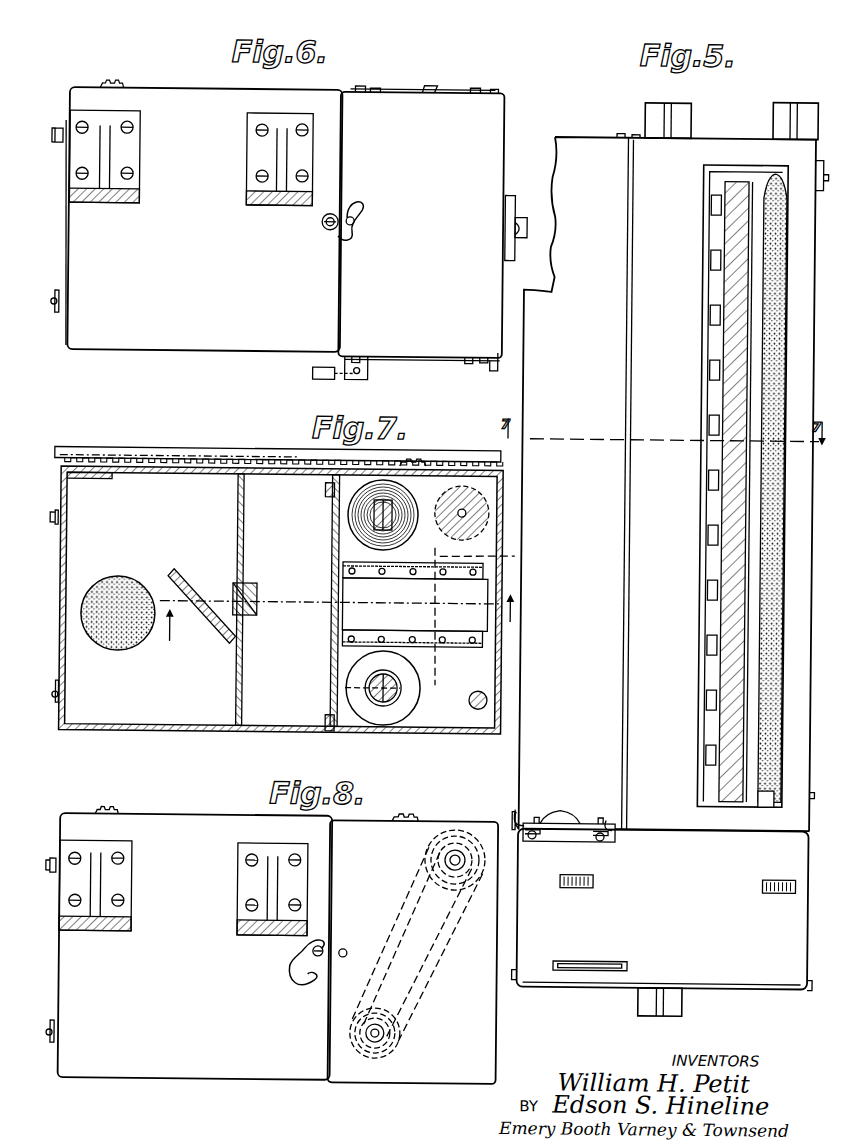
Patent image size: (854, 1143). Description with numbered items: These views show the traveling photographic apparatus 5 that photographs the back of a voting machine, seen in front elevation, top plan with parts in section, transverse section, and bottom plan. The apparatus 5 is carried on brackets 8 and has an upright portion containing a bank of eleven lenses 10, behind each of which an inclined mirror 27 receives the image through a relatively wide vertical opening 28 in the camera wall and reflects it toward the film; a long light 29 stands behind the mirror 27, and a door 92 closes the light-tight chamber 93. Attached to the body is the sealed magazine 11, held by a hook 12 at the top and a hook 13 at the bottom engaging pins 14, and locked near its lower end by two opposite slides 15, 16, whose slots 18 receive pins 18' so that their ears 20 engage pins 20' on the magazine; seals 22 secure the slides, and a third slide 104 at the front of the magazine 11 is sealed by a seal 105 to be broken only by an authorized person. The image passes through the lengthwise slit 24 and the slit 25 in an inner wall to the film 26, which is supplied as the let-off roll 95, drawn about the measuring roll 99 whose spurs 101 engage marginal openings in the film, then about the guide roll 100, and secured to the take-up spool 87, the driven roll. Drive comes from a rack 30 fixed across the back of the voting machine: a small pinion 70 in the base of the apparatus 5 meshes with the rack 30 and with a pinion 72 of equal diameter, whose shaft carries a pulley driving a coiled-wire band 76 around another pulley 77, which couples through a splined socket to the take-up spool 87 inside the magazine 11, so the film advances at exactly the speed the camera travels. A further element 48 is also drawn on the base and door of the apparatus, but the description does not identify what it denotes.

In FIG. 6, the photographic apparatus 5 is at (227, 366).
In FIG. 7, the photographic apparatus 5 is at (236, 749).
In FIG. 8, the photographic apparatus 5 is at (234, 1096).
In FIG. 6, the brackets 8 is at (119, 196).
In FIG. 5, the brackets 8 is at (650, 113).
In FIG. 7, the lenses 10 is at (262, 599).
In FIG. 5, the lenses 10 is at (694, 384).
In FIG. 6, the magazine 11 is at (512, 100).
In FIG. 7, the magazine 11 is at (471, 738).
In FIG. 8, the magazine 11 is at (458, 1094).
In FIG. 5, the magazine 11 is at (674, 482).
In FIG. 6, the hook 12 is at (327, 232).
In FIG. 7, the hook 13 is at (338, 591).
In FIG. 8, the hook 13 is at (308, 982).
In FIG. 6, the pins 14 is at (361, 224).
In FIG. 8, the pins 14 is at (355, 952).
In FIG. 6, the slide 15 is at (427, 362).
In FIG. 5, the slide 16 is at (582, 833).
In FIG. 5, the slot 18 is at (576, 848).
In FIG. 5, the pin 18' is at (564, 810).
In FIG. 5, the ear 20 is at (572, 800).
In FIG. 5, the pin 20' is at (585, 803).
In FIG. 6, the seal 22 is at (320, 380).
In FIG. 7, the lengthwise slit 24 is at (348, 603).
In FIG. 7, the slit 25 is at (492, 606).
In FIG. 7, the film 26 is at (500, 654).
In FIG. 7, the inclined mirror 27 is at (212, 622).
In FIG. 7, the vertical opening 28 is at (184, 474).
In FIG. 5, the vertical opening 28 is at (752, 316).
In FIG. 7, the light 29 is at (126, 644).
In FIG. 5, the light 29 is at (796, 474).
In FIG. 7, the rack 30 is at (258, 454).
In FIG. 6, the slot 48 is at (432, 88).
In FIG. 5, the slot 48 is at (591, 962).
In FIG. 6, the pinion 70 is at (404, 92).
In FIG. 7, the pinion 70 is at (420, 466).
In FIG. 8, the pinion 70 is at (416, 820).
In FIG. 5, the pinion 70 is at (591, 888).
In FIG. 8, the pinion 72 is at (463, 836).
In FIG. 8, the driving band 76 is at (416, 1016).
In FIG. 8, the pulley 77 is at (407, 1048).
In FIG. 7, the take-up spool 87 is at (402, 692).
In FIG. 6, the door 92 is at (67, 245).
In FIG. 7, the door 92 is at (68, 583).
In FIG. 8, the door 92 is at (68, 965).
In FIG. 7, the chamber 93 is at (117, 514).
In FIG. 7, the let-off roll 95 is at (378, 517).
In FIG. 7, the measuring roll 99 is at (492, 504).
In FIG. 7, the guide roll 100 is at (484, 710).
In FIG. 7, the spurs 101 is at (459, 614).
In FIG. 5, the third slide 104 is at (521, 812).
In FIG. 6, the seal 105 is at (523, 216).